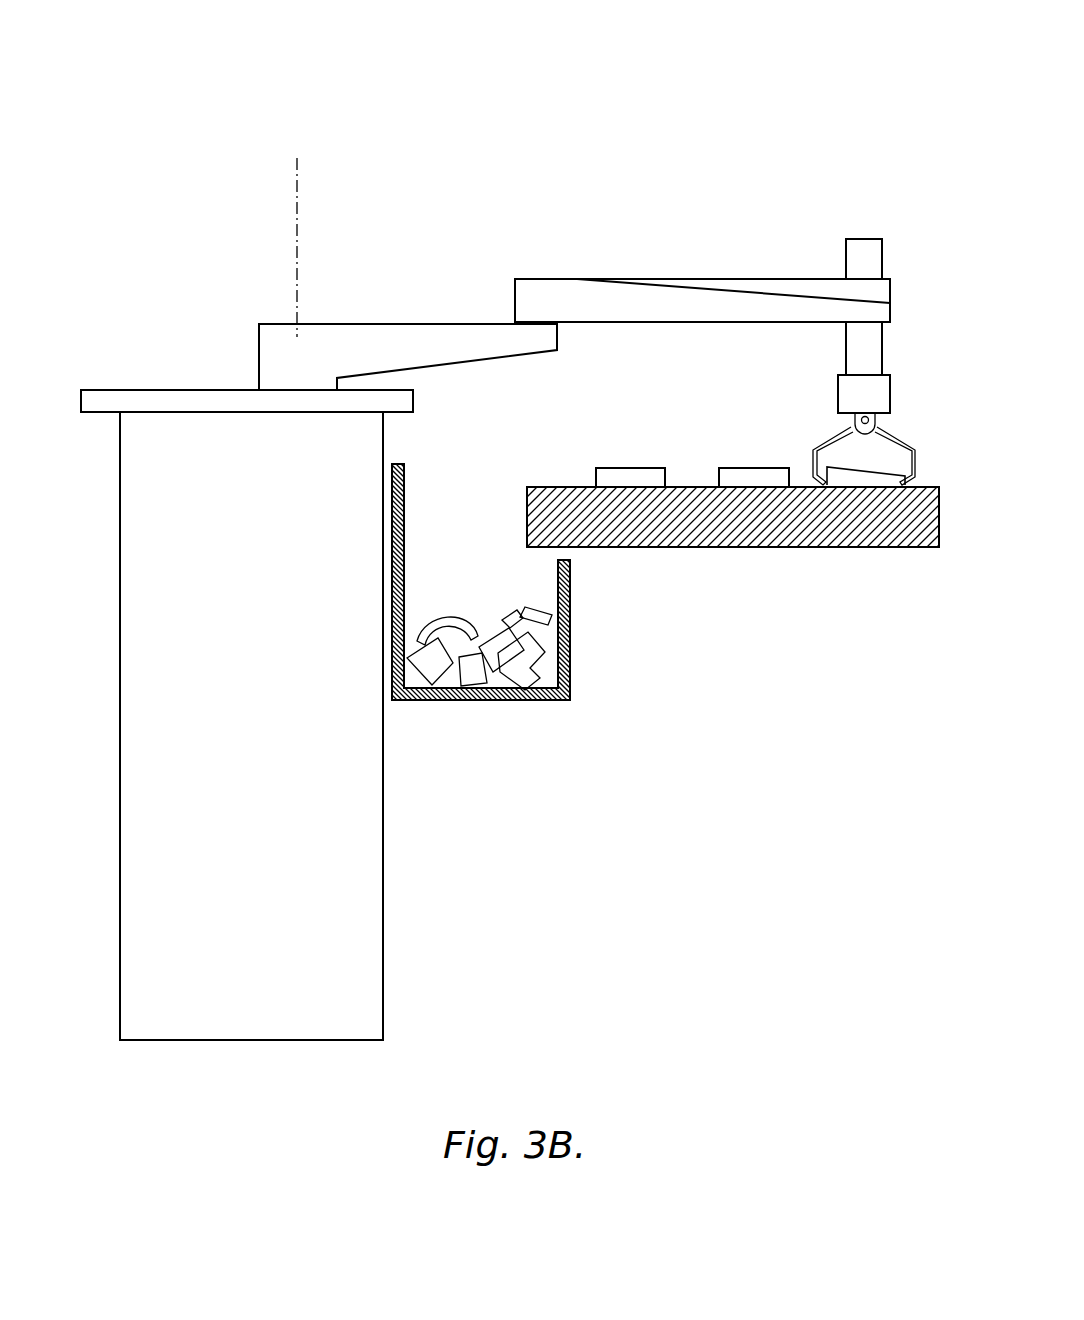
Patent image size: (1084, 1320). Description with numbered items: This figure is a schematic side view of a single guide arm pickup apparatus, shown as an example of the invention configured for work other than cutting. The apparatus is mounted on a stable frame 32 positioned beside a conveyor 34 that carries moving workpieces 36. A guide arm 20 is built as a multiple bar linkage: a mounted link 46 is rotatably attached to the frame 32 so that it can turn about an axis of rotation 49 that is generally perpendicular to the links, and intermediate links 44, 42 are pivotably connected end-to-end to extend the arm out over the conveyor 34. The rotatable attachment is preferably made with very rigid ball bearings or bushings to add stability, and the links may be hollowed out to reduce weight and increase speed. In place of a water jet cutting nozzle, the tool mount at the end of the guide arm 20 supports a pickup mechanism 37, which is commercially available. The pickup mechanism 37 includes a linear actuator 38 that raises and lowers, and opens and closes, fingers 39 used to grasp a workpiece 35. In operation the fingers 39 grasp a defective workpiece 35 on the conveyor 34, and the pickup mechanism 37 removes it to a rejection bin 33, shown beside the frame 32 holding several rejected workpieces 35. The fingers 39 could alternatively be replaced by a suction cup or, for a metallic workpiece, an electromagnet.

The guide arm 20 is at (836, 104).
The frame 32 is at (366, 946).
The rejection bin 33 is at (555, 693).
The conveyor 34 is at (722, 537).
The defective workpiece 35 is at (845, 478).
The workpiece 36 is at (633, 473).
The pickup mechanism 37 is at (817, 426).
The linear actuator 38 is at (846, 337).
The fingers 39 is at (813, 450).
The intermediate link 42 is at (723, 287).
The intermediate link 44 is at (563, 290).
The mounted link 46 is at (259, 360).
The axis of rotation 49 is at (297, 240).